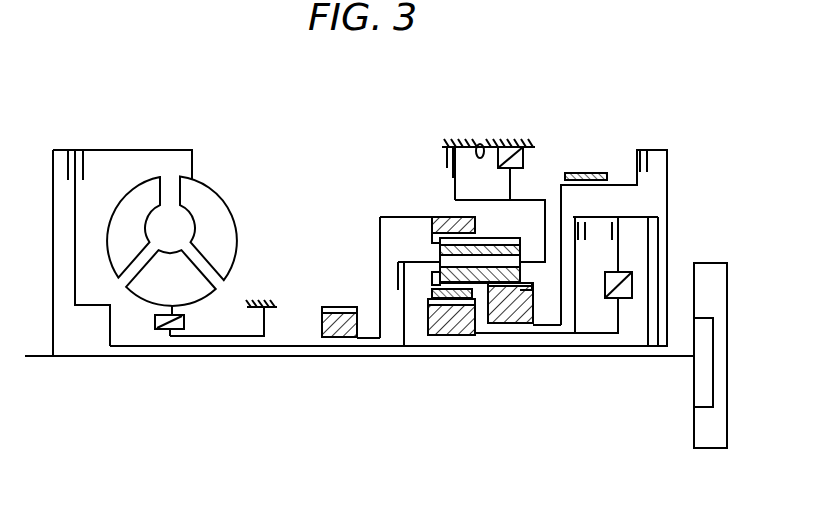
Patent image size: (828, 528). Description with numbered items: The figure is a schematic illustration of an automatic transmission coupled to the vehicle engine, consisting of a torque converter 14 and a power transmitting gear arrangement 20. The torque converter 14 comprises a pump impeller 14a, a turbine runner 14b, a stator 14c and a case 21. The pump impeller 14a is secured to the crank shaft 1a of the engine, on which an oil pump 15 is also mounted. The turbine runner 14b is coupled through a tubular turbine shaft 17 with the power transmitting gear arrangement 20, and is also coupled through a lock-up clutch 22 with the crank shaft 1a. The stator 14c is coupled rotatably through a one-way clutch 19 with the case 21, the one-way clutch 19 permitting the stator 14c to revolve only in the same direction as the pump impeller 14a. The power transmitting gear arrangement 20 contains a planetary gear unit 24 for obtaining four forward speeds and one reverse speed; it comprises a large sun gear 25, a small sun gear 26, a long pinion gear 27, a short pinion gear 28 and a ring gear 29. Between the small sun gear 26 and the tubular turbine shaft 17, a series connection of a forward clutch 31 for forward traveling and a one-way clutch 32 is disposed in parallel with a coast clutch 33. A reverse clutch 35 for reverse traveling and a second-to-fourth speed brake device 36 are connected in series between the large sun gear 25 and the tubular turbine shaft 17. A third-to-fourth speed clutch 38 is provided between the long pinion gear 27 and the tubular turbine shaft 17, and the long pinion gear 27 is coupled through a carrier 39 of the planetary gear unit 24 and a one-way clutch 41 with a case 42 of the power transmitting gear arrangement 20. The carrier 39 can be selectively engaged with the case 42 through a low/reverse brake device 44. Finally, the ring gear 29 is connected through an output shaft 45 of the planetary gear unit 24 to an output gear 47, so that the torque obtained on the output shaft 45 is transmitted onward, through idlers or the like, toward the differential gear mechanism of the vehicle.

The crank shaft 1a is at (46, 358).
The torque converter 14 is at (198, 223).
The pump impeller 14a is at (228, 222).
The turbine runner 14b is at (145, 190).
The stator 14c is at (197, 288).
The oil pump 15 is at (696, 425).
The tubular turbine shaft 17 is at (282, 347).
The one-way clutch 19 is at (166, 330).
The power transmitting gear arrangement 20 is at (549, 155).
The case 21 is at (273, 309).
The lock-up clutch 22 is at (68, 168).
The planetary gear unit 24 is at (434, 210).
The large sun gear 25 is at (517, 324).
The small sun gear 26 is at (457, 336).
The long pinion gear 27 is at (522, 248).
The short pinion gear 28 is at (428, 289).
The ring gear 29 is at (432, 226).
The forward clutch 31 is at (618, 229).
The one-way clutch 32 is at (628, 299).
The coast clutch 33 is at (587, 233).
The reverse clutch 35 is at (646, 167).
The 2-4 brake device 36 is at (598, 173).
The 3-4 clutch 38 is at (380, 276).
The carrier 39 is at (536, 200).
The one-way clutch 41 is at (511, 146).
The case 42 is at (480, 144).
The low/reverse brake device 44 is at (446, 161).
The output shaft 45 is at (404, 347).
The output gear 47 is at (338, 338).